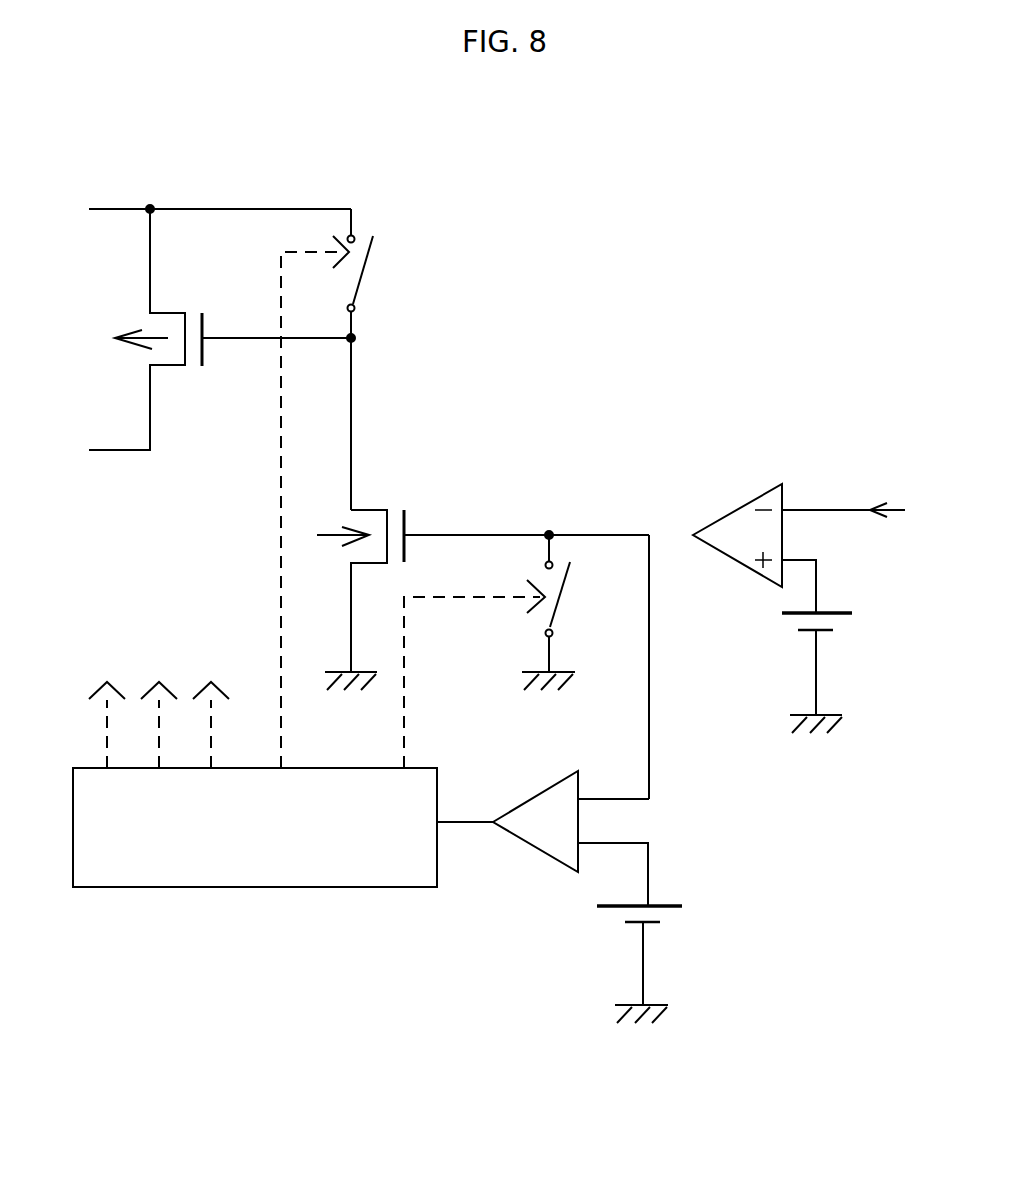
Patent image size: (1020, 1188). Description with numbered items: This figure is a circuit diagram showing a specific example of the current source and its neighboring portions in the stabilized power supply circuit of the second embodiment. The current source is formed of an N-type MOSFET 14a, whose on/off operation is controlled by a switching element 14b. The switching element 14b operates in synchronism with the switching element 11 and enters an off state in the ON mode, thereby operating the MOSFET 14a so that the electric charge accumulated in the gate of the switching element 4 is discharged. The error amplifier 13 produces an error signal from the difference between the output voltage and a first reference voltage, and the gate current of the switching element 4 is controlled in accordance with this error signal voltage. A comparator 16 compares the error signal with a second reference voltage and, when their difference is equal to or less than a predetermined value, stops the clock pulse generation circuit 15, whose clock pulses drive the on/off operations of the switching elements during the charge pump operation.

The switching element 4 is at (152, 349).
The switching element 11 is at (377, 248).
The error amplifier 13 is at (730, 510).
The N-type MOSFET 14a is at (316, 545).
The switching element 14b is at (553, 628).
The clock pulse generation circuit 15 is at (252, 887).
The comparator 16 is at (533, 848).